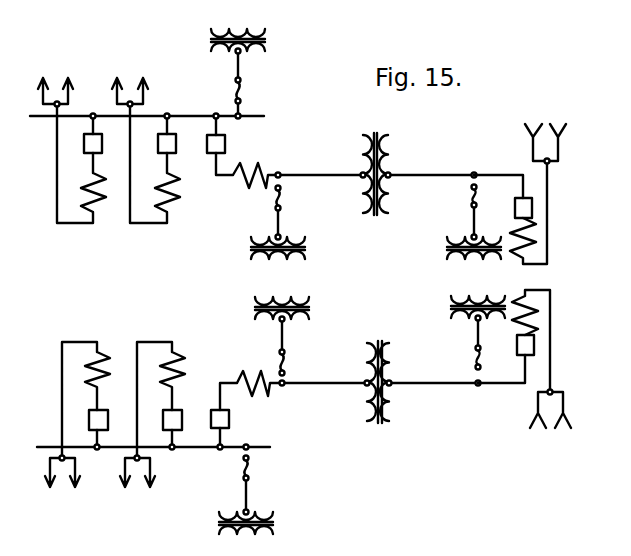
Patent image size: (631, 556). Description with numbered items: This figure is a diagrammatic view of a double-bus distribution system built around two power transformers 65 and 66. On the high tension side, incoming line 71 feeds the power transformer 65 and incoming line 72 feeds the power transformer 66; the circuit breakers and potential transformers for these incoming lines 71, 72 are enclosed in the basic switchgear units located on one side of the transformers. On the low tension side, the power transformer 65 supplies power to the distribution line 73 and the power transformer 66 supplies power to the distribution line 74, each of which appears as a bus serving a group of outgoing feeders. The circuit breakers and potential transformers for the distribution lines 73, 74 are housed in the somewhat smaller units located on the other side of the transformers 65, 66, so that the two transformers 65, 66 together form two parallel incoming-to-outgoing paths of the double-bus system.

The power transformer 65 is at (390, 156).
The power transformer 66 is at (392, 399).
The incoming line 71 is at (549, 192).
The incoming line 72 is at (551, 369).
The distribution line 73 is at (132, 84).
The distribution line 74 is at (137, 484).